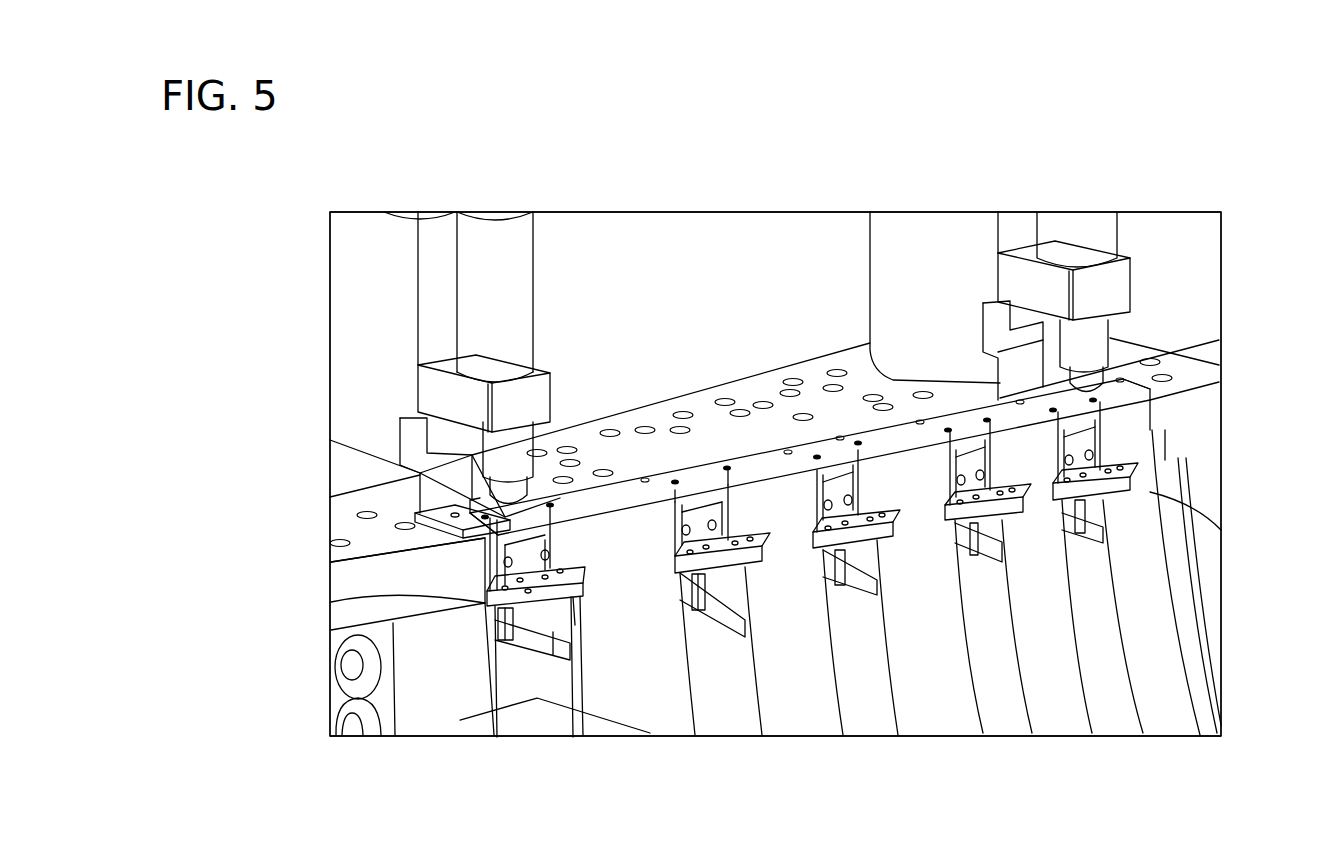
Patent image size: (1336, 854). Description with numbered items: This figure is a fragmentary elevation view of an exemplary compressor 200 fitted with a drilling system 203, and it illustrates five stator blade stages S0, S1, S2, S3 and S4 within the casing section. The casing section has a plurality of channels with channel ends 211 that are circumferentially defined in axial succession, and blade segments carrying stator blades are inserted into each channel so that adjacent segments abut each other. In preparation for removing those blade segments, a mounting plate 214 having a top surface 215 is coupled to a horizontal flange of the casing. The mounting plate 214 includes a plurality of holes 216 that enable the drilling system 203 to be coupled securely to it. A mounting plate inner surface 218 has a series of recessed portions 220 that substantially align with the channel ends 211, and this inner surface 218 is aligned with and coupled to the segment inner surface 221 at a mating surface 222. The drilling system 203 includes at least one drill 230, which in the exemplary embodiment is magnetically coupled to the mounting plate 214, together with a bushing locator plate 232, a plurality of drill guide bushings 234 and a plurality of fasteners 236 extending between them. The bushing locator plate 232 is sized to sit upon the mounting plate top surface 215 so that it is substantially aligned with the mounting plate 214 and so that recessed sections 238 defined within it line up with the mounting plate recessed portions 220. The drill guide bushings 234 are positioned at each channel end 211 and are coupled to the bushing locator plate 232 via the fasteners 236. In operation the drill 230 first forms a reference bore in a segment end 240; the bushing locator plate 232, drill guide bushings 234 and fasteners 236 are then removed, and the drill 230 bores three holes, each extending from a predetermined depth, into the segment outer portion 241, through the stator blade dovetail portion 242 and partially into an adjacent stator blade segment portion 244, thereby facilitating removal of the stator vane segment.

The compressor 200 is at (1246, 184).
The drilling system 203 is at (601, 194).
The drill 230 is at (356, 300).
The top surface 215 is at (815, 368).
The holes 216 is at (729, 386).
The mounting plate 214 is at (645, 420).
The mounting plate inner surface 218 is at (1208, 404).
The bushing locator plate 232 is at (430, 525).
The recessed sections 238 is at (505, 517).
The mating surface 222 is at (410, 600).
The segment inner surface 221 is at (419, 677).
The drill guide bushings 234 is at (675, 492).
The fasteners 236 is at (716, 545).
The segment end 240 is at (583, 634).
The segment outer portion 241 is at (578, 640).
The stator blade dovetail portion 242 is at (550, 617).
The adjacent stator blade segment portion 244 is at (513, 680).
The recessed portions 220 is at (1117, 442).
The channel ends 211 is at (1152, 498).
The stator blade stage S0 is at (500, 690).
The stator blade stage S1 is at (727, 697).
The stator blade stage S2 is at (863, 683).
The stator blade stage S3 is at (1002, 688).
The stator blade stage S4 is at (1110, 688).